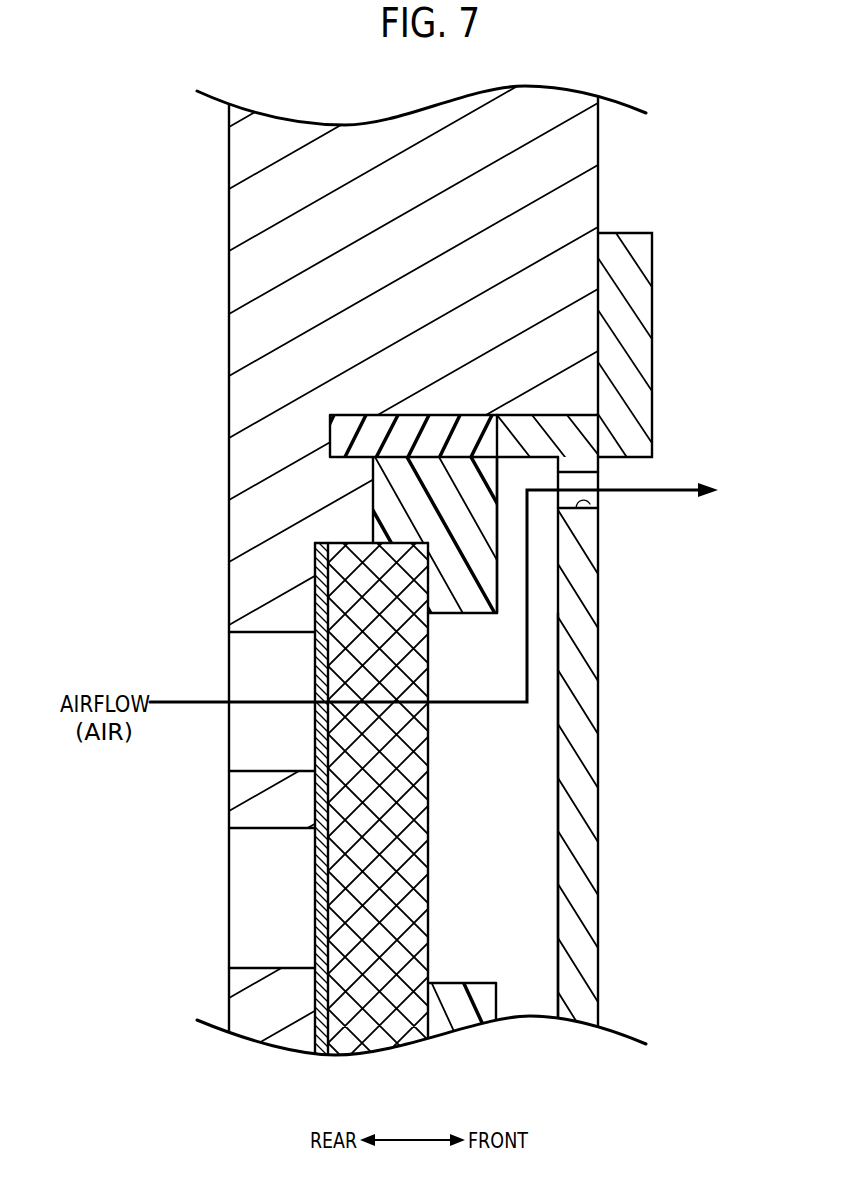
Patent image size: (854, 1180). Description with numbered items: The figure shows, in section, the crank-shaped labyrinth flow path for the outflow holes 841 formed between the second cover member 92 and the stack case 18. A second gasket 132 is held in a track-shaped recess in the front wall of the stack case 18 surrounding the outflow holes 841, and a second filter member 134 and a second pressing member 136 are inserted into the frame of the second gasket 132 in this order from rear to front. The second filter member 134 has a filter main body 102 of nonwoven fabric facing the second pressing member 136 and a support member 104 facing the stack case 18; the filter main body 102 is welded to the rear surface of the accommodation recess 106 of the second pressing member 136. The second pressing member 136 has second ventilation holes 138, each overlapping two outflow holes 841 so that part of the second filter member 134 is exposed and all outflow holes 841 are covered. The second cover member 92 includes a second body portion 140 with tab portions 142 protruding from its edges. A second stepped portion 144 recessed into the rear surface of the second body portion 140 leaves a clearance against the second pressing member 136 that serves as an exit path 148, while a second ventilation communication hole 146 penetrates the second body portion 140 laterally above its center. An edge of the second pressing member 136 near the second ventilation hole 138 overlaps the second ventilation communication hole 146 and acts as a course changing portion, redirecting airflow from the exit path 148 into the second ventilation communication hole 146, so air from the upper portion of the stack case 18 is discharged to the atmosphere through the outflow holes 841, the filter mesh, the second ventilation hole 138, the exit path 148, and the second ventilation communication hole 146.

The stack case 18 is at (349, 550).
The second cover member 92 is at (668, 376).
The tab portion 142 is at (637, 342).
The second gasket 132 is at (445, 427).
The second pressing member 136 is at (374, 778).
The accommodation recess 106 is at (435, 568).
The outflow hole 841 is at (252, 636).
The exit path 148 is at (543, 587).
The second body portion 140 is at (604, 804).
The second ventilation communication hole 146 is at (582, 504).
The second stepped portion 144 is at (557, 722).
The second ventilation hole 138 is at (468, 983).
The second filter member 134 is at (265, 787).
The filter main body 102 is at (345, 866).
The support member 104 is at (322, 907).